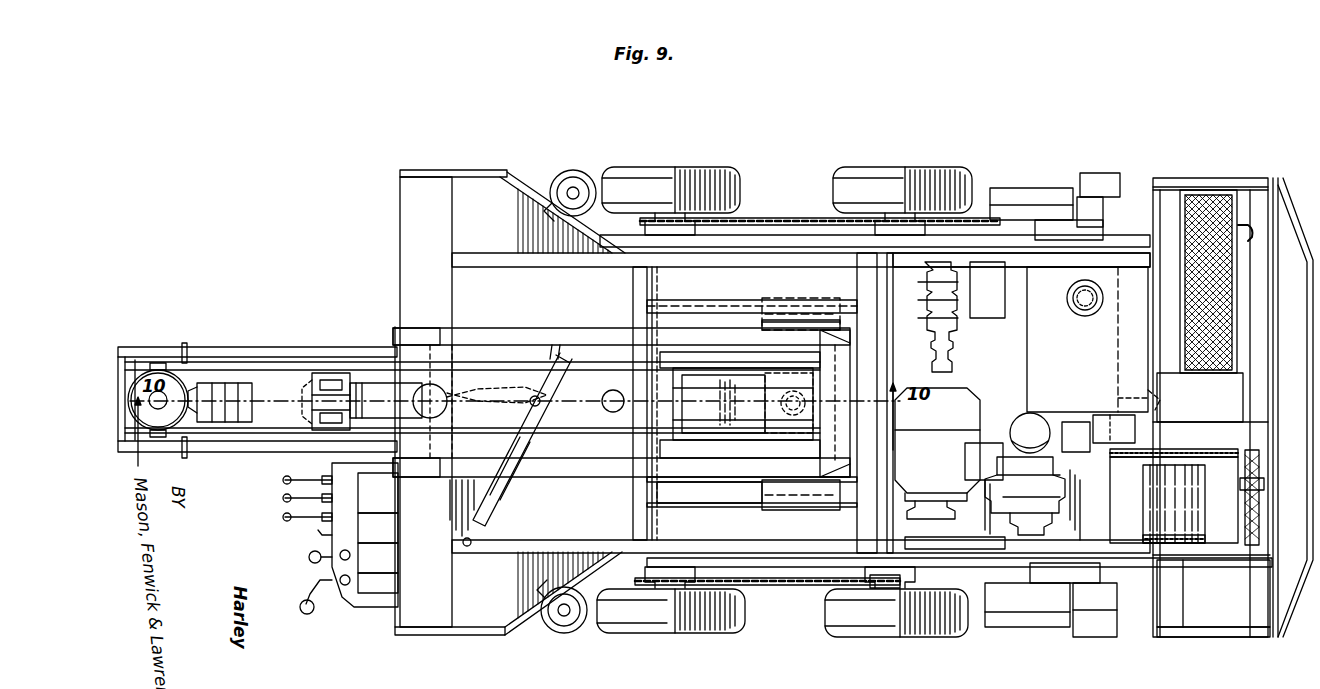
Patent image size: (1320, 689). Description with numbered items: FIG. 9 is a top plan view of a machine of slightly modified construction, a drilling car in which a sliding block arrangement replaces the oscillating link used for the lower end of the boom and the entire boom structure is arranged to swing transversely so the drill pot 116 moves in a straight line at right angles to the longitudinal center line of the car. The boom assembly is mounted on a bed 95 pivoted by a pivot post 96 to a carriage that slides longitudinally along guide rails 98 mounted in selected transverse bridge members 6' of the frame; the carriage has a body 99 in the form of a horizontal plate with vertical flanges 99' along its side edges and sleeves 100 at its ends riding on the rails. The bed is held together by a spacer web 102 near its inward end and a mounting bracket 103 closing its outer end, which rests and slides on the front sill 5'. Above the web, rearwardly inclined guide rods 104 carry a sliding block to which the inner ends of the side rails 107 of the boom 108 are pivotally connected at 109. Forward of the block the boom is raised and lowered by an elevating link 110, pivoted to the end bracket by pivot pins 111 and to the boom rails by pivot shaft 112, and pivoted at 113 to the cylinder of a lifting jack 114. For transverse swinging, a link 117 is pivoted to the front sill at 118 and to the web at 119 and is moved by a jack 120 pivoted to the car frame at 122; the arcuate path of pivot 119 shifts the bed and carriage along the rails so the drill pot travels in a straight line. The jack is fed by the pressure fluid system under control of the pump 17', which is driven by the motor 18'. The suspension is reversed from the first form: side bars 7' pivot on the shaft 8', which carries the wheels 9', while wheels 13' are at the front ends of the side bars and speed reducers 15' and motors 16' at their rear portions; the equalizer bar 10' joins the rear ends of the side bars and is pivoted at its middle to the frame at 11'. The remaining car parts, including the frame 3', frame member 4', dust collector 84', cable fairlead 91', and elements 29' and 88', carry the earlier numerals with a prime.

The car frame 3' is at (936, 402).
The frame member 4' is at (801, 403).
The front sill 5' is at (434, 477).
The transverse bridge members 6' is at (764, 403).
The side bars 7' is at (817, 394).
The shaft 8' is at (987, 274).
The wheels 9' is at (898, 416).
The equalizer bar 10' is at (1174, 496).
The pivot 11' is at (1124, 339).
The wheels 13' is at (671, 417).
The speed reducers 15' is at (1044, 405).
The motors 16' is at (1103, 408).
The pump 17' is at (956, 317).
The motor 18' is at (953, 445).
The boom end sheave shaft 29' is at (159, 373).
The dust collector 84' is at (1233, 425).
The guide sheave 88' is at (569, 404).
The cable fairlead 91' is at (1237, 497).
The bed 95 is at (732, 477).
The pivot post 96 is at (766, 412).
The guide rails 98 is at (693, 295).
The body 99 is at (786, 334).
The vertical flanges 99' is at (801, 299).
The sleeves 100 is at (784, 294).
The spacer web 102 is at (704, 374).
The mounting bracket 103 is at (333, 376).
The guide rods 104 is at (704, 384).
The side rails 107 is at (311, 351).
The boom 108 is at (386, 338).
The pivot connection 109 is at (794, 363).
The elevating link 110 is at (484, 352).
The pivot pins 111 is at (310, 390).
The pivot shaft 112 is at (550, 352).
The pivot 113 is at (426, 332).
The lifting jack 114 is at (372, 404).
The drill pot 116 is at (188, 381).
The link 117 is at (556, 404).
The pivot 118 is at (476, 410).
The pivot 119 is at (612, 412).
The jack 120 is at (497, 494).
The pivot 122 is at (470, 550).